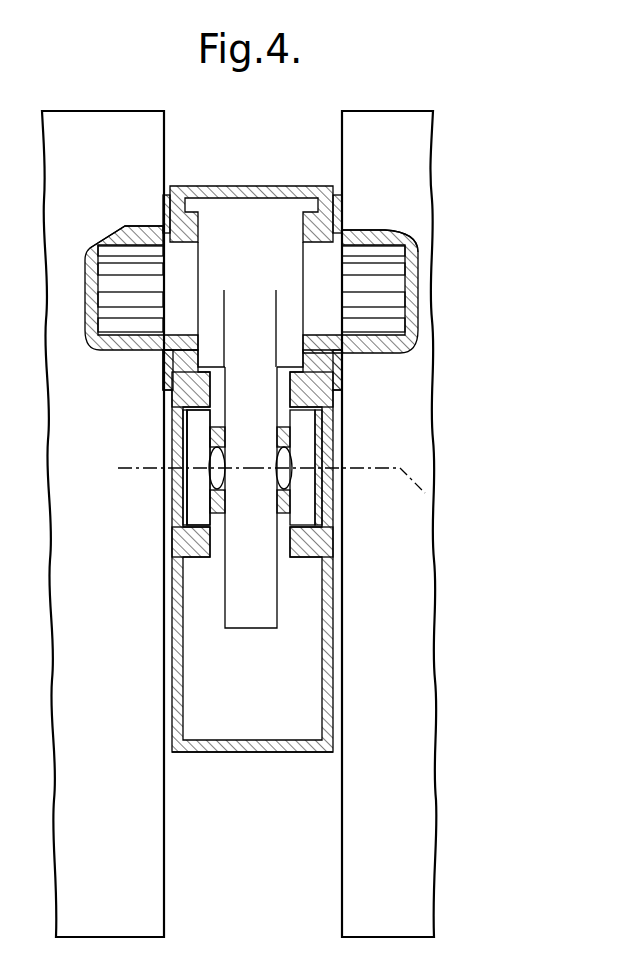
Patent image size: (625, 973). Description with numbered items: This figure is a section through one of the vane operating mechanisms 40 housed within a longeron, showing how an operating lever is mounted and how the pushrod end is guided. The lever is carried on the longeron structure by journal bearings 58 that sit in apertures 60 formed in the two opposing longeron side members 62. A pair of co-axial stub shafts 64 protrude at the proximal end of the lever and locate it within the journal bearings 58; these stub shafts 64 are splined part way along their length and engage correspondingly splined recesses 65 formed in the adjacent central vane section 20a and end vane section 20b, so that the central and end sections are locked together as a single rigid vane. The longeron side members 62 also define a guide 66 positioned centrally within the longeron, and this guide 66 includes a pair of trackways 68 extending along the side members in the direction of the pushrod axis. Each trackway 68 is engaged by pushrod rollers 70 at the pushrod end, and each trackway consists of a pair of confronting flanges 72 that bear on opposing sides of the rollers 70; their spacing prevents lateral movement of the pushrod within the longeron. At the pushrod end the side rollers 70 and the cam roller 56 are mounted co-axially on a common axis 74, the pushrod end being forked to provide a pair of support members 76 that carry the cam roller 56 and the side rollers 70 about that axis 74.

The vane operating mechanism 40 is at (210, 760).
The cam roller 56 is at (247, 420).
The journal bearings 58 is at (345, 228).
The apertures 60 is at (105, 338).
The longeron side members 62 is at (172, 637).
The stub shafts 64 is at (155, 228).
The splined recesses 65 is at (93, 297).
The guide 66 is at (150, 501).
The trackways 68 is at (172, 468).
The pushrod rollers 70 is at (308, 433).
The confronting flanges 72 is at (172, 396).
The common axis 74 is at (427, 493).
The support members 76 is at (215, 525).
The central vane section 20a is at (135, 463).
The end vane section 20b is at (408, 462).